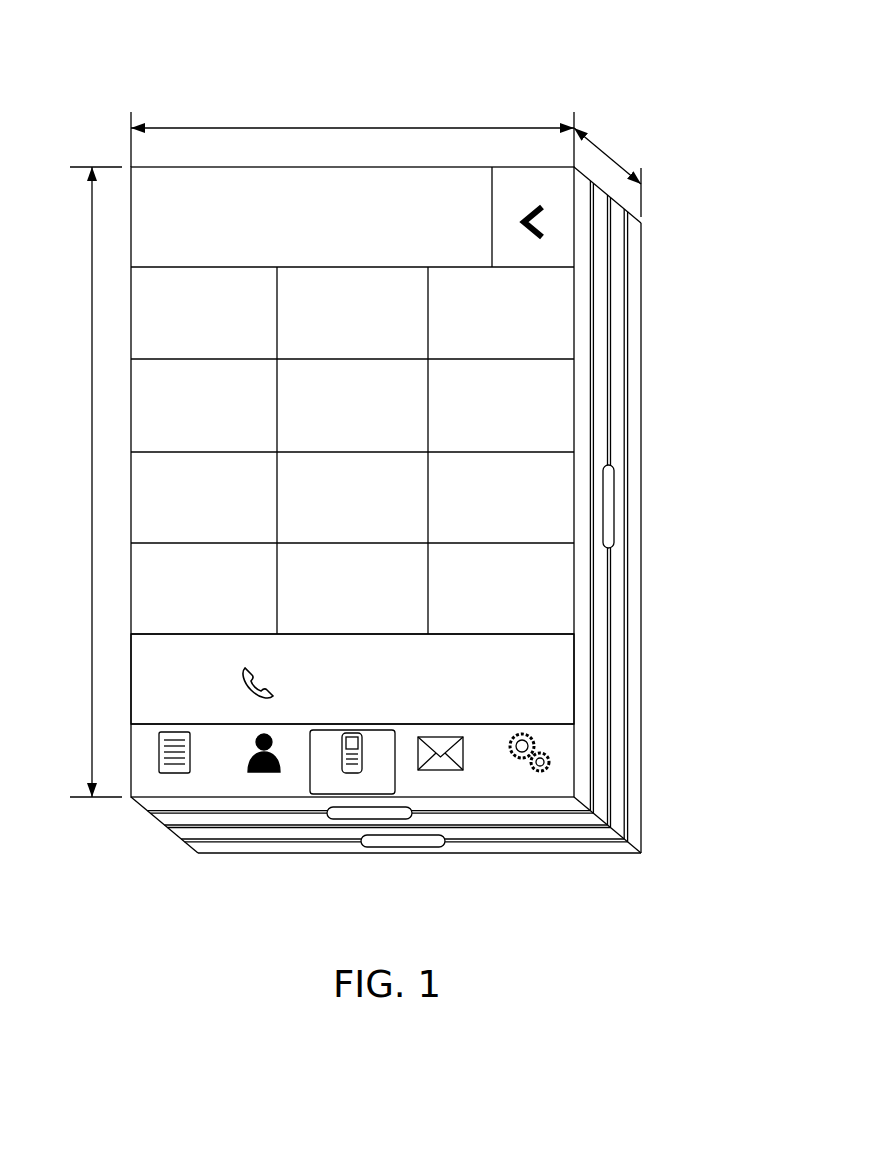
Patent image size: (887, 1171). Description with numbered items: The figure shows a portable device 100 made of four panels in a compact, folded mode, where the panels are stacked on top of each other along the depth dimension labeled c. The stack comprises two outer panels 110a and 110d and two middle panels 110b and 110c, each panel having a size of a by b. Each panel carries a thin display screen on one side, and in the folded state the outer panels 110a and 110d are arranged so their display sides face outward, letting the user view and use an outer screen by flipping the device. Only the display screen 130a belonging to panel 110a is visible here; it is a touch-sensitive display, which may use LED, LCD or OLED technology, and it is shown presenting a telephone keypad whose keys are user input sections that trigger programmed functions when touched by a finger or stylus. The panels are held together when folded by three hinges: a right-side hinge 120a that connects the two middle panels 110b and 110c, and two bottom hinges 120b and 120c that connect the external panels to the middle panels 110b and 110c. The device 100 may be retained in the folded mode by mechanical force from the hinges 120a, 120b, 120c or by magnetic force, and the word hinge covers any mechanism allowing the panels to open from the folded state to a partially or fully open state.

The device 100 is at (102, 44).
The panel 110a is at (581, 405).
The panel 110b is at (598, 348).
The panel 110c is at (615, 310).
The panel 110d is at (632, 282).
The hinge 120a is at (615, 505).
The hinge 120b is at (340, 819).
The hinge 120c is at (425, 847).
The display screen 130a is at (553, 682).